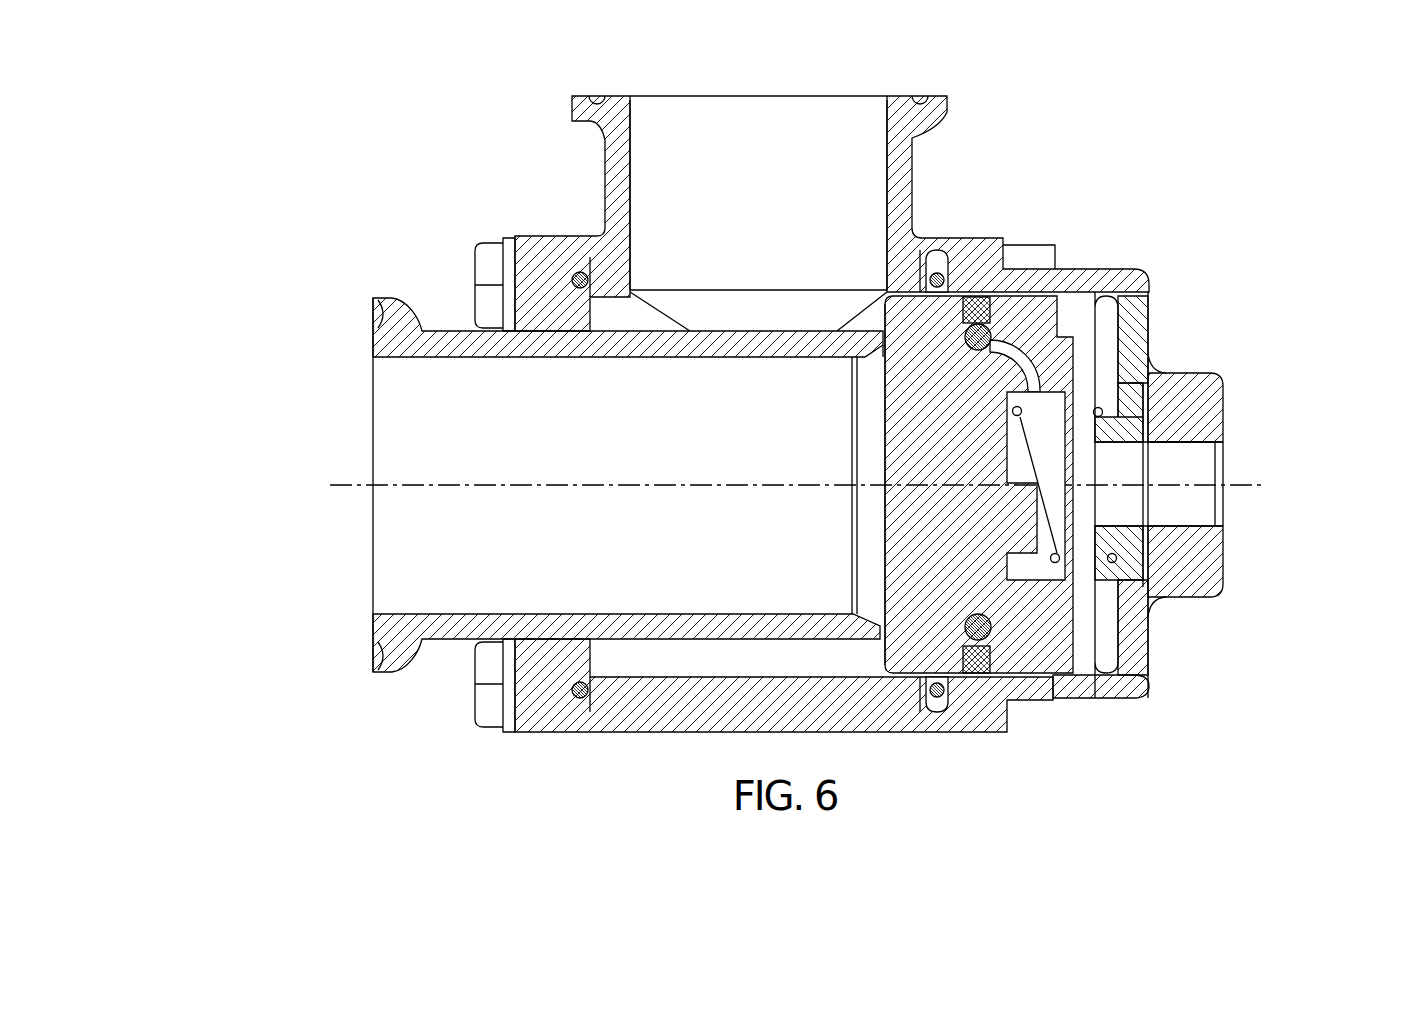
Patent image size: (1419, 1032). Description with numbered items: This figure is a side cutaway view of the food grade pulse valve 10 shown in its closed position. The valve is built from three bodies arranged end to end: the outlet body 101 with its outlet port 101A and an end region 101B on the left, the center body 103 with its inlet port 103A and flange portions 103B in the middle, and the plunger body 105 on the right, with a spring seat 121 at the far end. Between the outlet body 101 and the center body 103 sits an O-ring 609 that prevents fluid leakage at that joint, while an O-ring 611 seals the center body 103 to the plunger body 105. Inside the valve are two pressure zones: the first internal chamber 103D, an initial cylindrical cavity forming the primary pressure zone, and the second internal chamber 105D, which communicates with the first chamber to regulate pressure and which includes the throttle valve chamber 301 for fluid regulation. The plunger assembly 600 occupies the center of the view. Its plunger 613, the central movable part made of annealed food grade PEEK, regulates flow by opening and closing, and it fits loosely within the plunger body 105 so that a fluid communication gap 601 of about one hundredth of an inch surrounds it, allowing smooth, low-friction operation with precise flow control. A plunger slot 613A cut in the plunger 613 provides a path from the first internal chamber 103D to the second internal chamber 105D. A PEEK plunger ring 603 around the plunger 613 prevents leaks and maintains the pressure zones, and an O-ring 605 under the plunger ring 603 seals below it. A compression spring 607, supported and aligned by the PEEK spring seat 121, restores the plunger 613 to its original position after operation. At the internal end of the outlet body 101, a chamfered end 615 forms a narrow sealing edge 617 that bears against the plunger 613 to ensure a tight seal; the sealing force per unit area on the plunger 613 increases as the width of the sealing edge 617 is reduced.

The food grade pulse valve 10 is at (416, 209).
The outlet body 101 is at (421, 640).
The outlet port 101A is at (373, 432).
The conduit end flange 101B is at (393, 615).
The center body 103 is at (912, 185).
The inlet port 103A is at (773, 90).
The clamp flange 103B is at (605, 157).
The first internal chamber 103D is at (875, 287).
The plunger body 105 is at (1223, 393).
The second internal chamber 105D is at (1215, 505).
The spring seat 121 is at (1142, 575).
The throttle valve chamber 301 is at (1223, 465).
The plunger assembly 600 is at (923, 484).
The gap 601 is at (930, 250).
The plunger ring 603 is at (1003, 292).
The O-ring under plunger ring 605 is at (993, 332).
The spring 607 is at (1053, 538).
The O-ring between outlet body and center body 609 is at (583, 705).
The O-ring between center body and plunger body 611 is at (938, 690).
The plunger 613 is at (979, 484).
The plunger slot 613A is at (1040, 378).
The chamfered end 615 is at (863, 628).
The sealing edge 617 is at (897, 355).